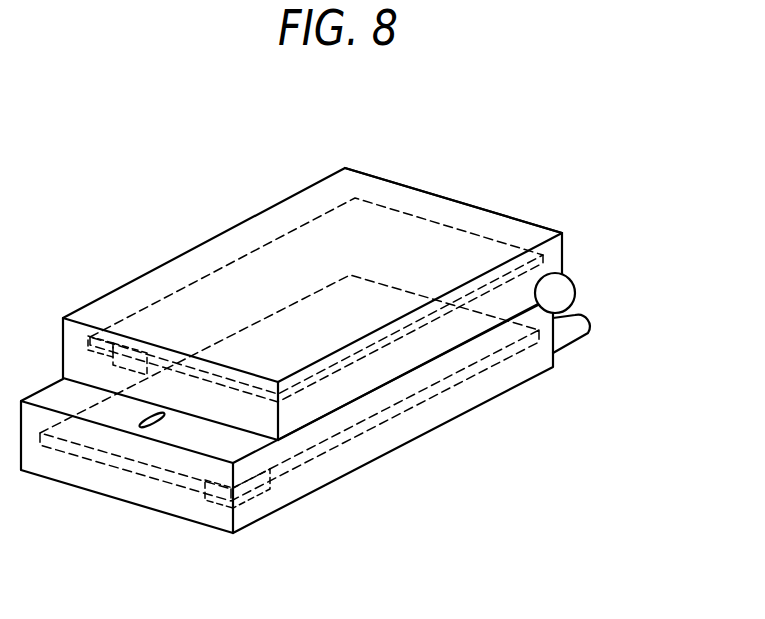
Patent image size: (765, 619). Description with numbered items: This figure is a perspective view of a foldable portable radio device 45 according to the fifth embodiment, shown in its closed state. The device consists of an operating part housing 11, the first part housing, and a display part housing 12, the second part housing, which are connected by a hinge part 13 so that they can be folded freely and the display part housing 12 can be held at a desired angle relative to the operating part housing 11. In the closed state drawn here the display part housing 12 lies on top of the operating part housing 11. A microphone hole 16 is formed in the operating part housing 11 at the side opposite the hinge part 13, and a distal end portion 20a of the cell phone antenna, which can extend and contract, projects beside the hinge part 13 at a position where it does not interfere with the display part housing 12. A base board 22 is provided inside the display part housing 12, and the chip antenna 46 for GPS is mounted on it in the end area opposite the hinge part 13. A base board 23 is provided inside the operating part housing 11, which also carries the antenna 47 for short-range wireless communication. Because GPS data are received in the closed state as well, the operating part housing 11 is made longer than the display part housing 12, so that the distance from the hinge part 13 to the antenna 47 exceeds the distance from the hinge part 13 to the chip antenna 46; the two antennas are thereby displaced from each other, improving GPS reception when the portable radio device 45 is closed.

The operating part housing 11 is at (430, 420).
The display part housing 12 is at (332, 195).
The hinge part 13 is at (560, 288).
The microphone hole 16 is at (160, 424).
The distal end portion of the antenna 20a is at (573, 330).
The base board 22 is at (453, 223).
The base board 23 is at (363, 427).
The portable radio device 45 is at (426, 176).
The chip antenna for GPS 46 is at (167, 336).
The antenna for short-range wireless communication 47 is at (282, 497).